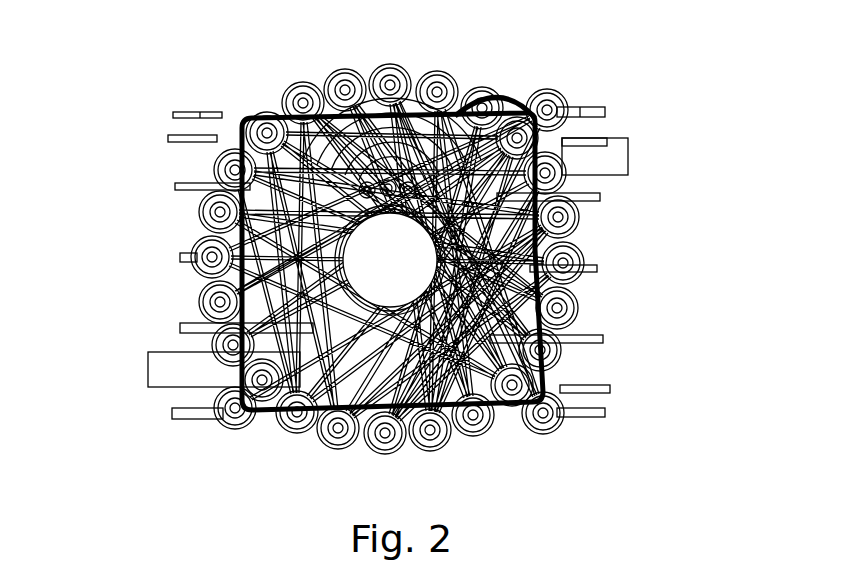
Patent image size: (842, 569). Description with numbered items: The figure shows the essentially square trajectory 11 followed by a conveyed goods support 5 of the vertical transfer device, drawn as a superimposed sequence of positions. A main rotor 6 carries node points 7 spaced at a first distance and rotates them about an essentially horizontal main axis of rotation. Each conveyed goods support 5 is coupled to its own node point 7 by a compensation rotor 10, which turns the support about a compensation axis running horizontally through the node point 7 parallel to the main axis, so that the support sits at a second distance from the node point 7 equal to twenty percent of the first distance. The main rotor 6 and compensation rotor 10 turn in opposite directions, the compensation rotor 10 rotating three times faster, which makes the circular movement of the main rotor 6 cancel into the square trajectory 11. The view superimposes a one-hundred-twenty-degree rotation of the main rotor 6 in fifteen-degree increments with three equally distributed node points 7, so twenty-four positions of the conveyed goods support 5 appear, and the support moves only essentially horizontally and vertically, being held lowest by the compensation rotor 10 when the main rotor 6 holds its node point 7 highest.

The conveyed goods support 5 is at (194, 77).
The main rotor 6 is at (372, 297).
The node point 7 is at (345, 83).
The compensation rotor 10 is at (245, 100).
The square trajectory 11 is at (470, 90).